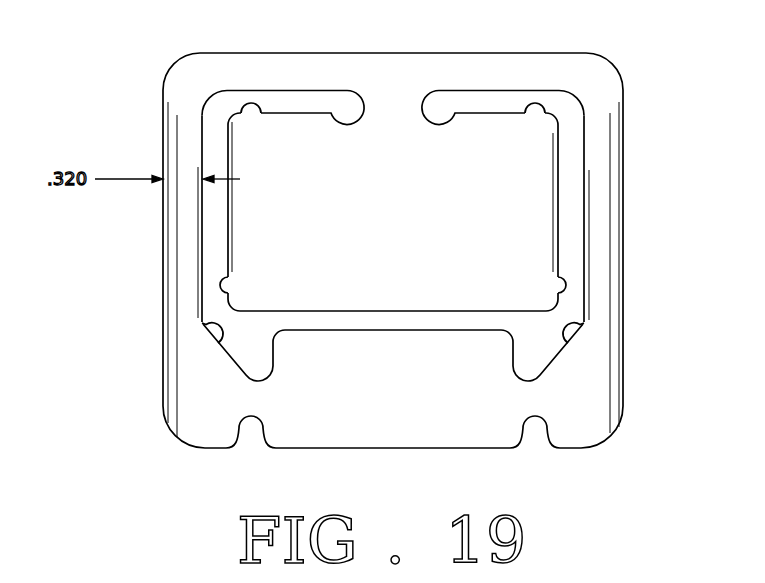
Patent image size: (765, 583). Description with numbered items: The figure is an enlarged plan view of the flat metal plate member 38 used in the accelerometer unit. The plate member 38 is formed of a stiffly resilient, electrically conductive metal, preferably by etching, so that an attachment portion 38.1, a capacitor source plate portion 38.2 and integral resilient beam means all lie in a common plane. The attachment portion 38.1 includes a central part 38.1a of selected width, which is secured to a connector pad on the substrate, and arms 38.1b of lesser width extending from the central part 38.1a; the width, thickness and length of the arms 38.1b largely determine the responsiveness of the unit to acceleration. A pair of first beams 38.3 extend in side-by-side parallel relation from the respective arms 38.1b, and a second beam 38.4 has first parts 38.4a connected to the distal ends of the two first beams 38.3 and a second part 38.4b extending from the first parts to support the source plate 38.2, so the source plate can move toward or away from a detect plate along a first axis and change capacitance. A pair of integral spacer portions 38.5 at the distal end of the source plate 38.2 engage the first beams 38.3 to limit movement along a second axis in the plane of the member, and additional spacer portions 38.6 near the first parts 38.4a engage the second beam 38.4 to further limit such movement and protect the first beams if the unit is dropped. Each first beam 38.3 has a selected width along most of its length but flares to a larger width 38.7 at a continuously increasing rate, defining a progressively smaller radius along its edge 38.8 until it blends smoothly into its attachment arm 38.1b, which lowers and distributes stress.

The flat metal plate member 38 is at (634, 174).
The attachment portion 38.1 is at (371, 405).
The central part 38.1a is at (412, 415).
The arms 38.1b is at (250, 407).
The capacitor source plate portion 38.2 is at (417, 231).
The first beams 38.3 is at (183, 221).
The second beam 38.4 is at (458, 73).
The first parts of second beam 38.4a is at (276, 72).
The second part of second beam 38.4b is at (391, 110).
The spacer portions 38.5 is at (220, 285).
The additional spacer portions 38.6 is at (247, 104).
The flared larger width of first beam 38.7 is at (203, 361).
The edge of first beam 38.8 is at (203, 326).